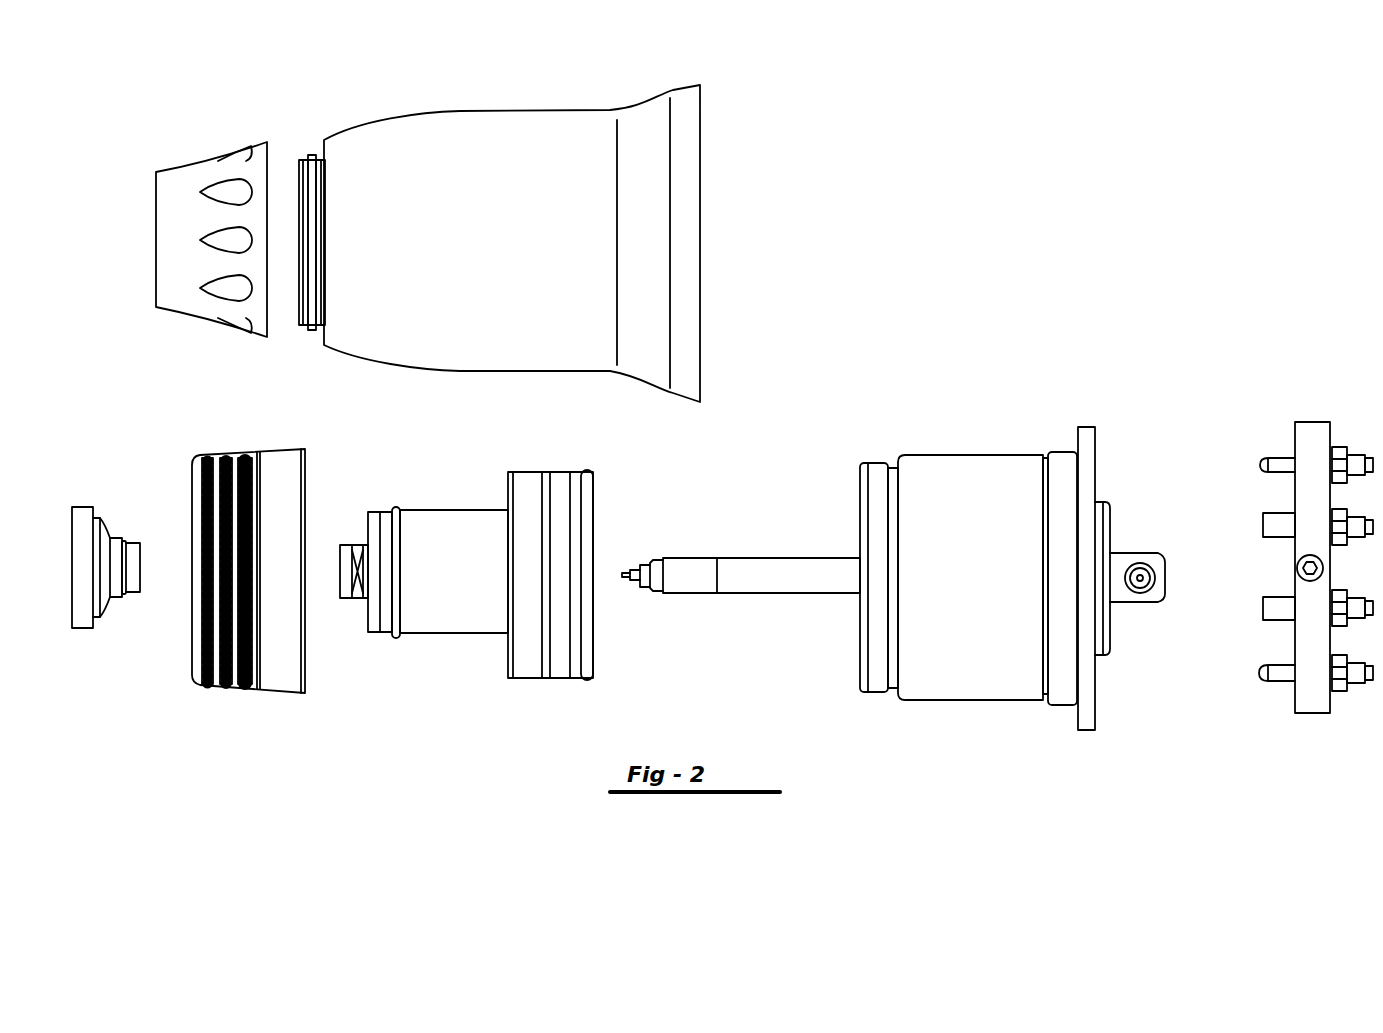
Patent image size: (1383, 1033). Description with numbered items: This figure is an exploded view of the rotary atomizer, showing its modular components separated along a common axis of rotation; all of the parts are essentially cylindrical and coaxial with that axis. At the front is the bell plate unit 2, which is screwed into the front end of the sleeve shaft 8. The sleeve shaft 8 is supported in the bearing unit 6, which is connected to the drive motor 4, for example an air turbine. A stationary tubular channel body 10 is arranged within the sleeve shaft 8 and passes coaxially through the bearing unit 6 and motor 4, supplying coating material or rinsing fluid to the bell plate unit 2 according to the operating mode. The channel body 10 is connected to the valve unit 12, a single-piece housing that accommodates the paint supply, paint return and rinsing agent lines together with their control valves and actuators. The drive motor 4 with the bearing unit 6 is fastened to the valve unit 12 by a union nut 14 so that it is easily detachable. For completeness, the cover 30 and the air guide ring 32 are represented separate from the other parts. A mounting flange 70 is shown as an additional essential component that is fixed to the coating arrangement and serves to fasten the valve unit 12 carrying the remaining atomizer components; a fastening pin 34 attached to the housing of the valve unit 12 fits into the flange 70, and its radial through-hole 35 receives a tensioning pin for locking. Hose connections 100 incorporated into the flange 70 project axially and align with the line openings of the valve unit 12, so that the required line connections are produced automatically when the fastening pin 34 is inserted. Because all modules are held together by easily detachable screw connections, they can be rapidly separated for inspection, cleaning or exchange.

The bell plate unit 2 is at (100, 515).
The drive motor 4 is at (532, 478).
The bearing unit 6 is at (433, 540).
The sleeve shaft 8 is at (348, 542).
The tubular channel body 10 is at (757, 575).
The valve unit 12 is at (950, 495).
The union nut 14 is at (272, 487).
The cover 30 is at (682, 257).
The air guide ring 32 is at (185, 293).
The fastening pin 34 is at (1132, 562).
The radial through-hole 35 is at (1145, 568).
The mounting flange 70 is at (1311, 445).
The hose connections 100 is at (1353, 438).